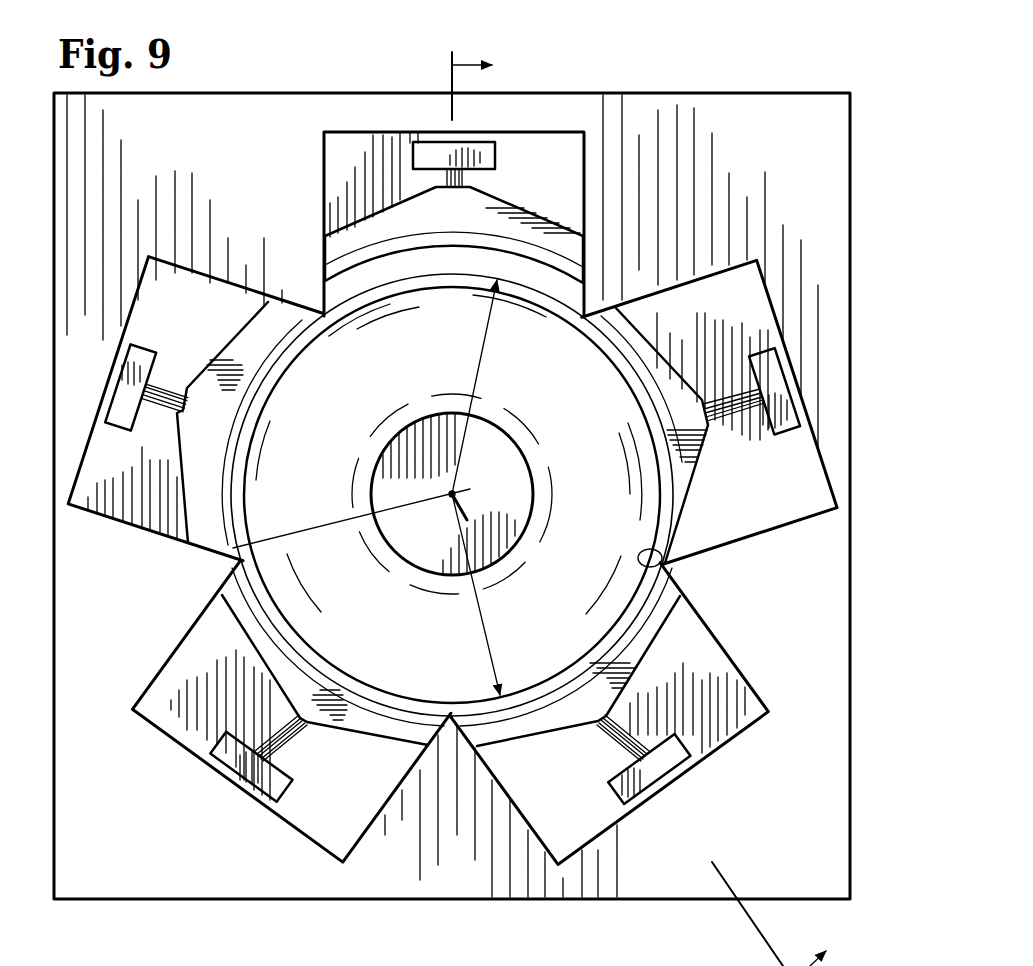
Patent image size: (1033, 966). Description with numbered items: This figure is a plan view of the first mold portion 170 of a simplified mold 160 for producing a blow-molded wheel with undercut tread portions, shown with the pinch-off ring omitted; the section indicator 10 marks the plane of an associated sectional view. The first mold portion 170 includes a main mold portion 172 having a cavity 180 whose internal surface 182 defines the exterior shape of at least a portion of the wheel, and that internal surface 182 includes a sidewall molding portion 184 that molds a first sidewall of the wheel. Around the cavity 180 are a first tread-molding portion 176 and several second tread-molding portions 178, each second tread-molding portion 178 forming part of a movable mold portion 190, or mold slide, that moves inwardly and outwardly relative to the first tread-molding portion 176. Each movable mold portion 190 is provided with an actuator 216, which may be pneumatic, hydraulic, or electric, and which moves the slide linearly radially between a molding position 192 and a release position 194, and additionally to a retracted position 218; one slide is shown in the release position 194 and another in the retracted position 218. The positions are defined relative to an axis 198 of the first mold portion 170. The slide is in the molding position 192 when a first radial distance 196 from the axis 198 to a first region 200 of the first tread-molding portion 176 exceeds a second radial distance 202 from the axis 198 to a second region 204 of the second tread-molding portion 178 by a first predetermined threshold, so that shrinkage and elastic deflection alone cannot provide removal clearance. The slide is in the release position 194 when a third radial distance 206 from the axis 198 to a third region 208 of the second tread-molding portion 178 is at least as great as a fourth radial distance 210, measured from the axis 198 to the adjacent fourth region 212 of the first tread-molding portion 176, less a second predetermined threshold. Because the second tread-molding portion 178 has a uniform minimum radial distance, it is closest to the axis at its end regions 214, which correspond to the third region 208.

The section line indicator 10 is at (660, 506).
The simplified mold 160 is at (734, 42).
The first mold portion 170 is at (784, 58).
The main mold portion 172 is at (804, 90).
The first tread-molding portion 176 is at (572, 314).
The second tread-molding portion 178 is at (572, 306).
The cavity 180 is at (640, 477).
The internal surface 182 is at (662, 562).
The sidewall molding portion 184 is at (540, 623).
The movable mold portion 190 is at (464, 227).
The molding position 192 is at (680, 633).
The release position 194 is at (200, 356).
The first radial distance 196 is at (472, 392).
The axis 198 is at (458, 491).
The first region 200 is at (498, 284).
The second radial distance 202 is at (483, 633).
The second region 204 is at (470, 697).
The third radial distance 206 is at (336, 523).
The third region 208 is at (228, 551).
The fourth radial distance 210 is at (357, 520).
The fourth region 212 is at (242, 544).
The end regions 214 is at (304, 316).
The actuator 216 is at (498, 150).
The retracted position 218 is at (536, 210).